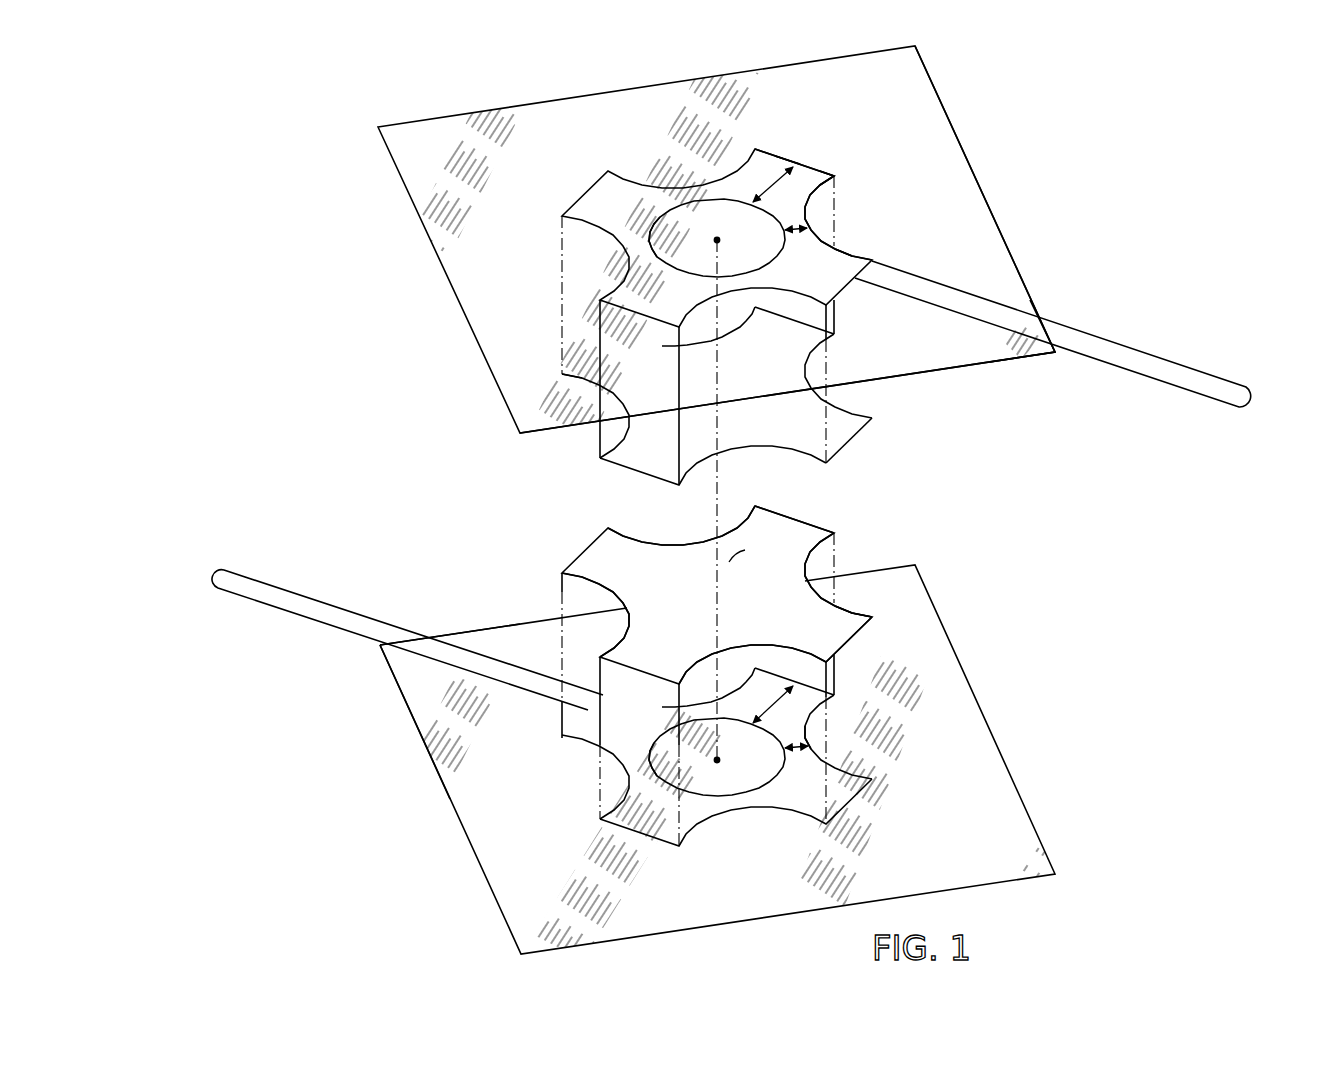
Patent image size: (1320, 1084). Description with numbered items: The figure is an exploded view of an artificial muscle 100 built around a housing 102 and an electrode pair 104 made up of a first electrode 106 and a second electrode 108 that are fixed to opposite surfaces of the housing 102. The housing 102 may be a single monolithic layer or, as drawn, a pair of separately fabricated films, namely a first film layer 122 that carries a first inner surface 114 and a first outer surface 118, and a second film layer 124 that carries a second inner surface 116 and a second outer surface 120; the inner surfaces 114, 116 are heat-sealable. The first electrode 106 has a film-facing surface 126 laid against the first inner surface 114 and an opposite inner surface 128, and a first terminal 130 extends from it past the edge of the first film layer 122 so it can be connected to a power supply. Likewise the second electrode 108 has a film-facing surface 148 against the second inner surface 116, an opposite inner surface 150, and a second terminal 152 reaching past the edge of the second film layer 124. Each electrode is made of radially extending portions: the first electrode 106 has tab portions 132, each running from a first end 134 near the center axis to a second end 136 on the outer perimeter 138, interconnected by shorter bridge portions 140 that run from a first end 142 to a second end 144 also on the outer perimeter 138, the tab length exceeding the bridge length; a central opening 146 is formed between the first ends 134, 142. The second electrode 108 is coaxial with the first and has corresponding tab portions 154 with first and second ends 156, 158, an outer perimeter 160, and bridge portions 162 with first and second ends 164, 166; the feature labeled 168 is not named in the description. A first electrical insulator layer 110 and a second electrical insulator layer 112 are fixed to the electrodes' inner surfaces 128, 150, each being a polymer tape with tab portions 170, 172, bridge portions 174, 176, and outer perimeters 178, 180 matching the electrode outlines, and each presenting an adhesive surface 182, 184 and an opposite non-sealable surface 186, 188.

The artificial muscle 100 is at (214, 160).
The housing 102 is at (419, 110).
The electrode pair 104 is at (1010, 434).
The first electrode 106 is at (741, 823).
The second electrode 108 is at (642, 166).
The first electrical insulator layer 110 is at (560, 559).
The second electrical insulator layer 112 is at (592, 450).
The first inner surface 114 is at (466, 641).
The second inner surface 116 is at (957, 372).
The first outer surface 118 is at (396, 708).
The second outer surface 120 is at (1010, 350).
The first film layer 122 is at (991, 666).
The second film layer 124 is at (991, 172).
The film-facing surface 126 is at (660, 843).
The inner surface 128 is at (620, 821).
The first terminal 130 is at (262, 583).
The tab portions 132 is at (834, 667).
The first end 134 is at (739, 760).
The second end 136 is at (786, 658).
The outer perimeter 138 is at (746, 652).
The bridge portions 140 is at (850, 735).
The first end 142 is at (763, 770).
The second end 144 is at (813, 725).
The central opening 146 is at (680, 772).
The film-facing surface 148 is at (742, 302).
The inner surface 150 is at (780, 292).
The second terminal 152 is at (1150, 346).
The tab portions 154 is at (784, 148).
The first end 156 is at (748, 210).
The second end 158 is at (797, 160).
The outer perimeter 160 is at (836, 176).
The bridge portions 162 is at (838, 232).
The first end 164 is at (739, 244).
The second end 166 is at (812, 216).
The hole edge 168 is at (672, 257).
The tab portions 170 is at (786, 511).
The tab portions 172 is at (849, 459).
The bridge portions 174 is at (818, 580).
The bridge portions 176 is at (728, 458).
The outer perimeter 178 is at (844, 603).
The outer perimeter 180 is at (856, 426).
The adhesive surface 182 is at (581, 586).
The adhesive surface 184 is at (622, 466).
The non-sealable surface 186 is at (658, 545).
The non-sealable surface 188 is at (562, 380).